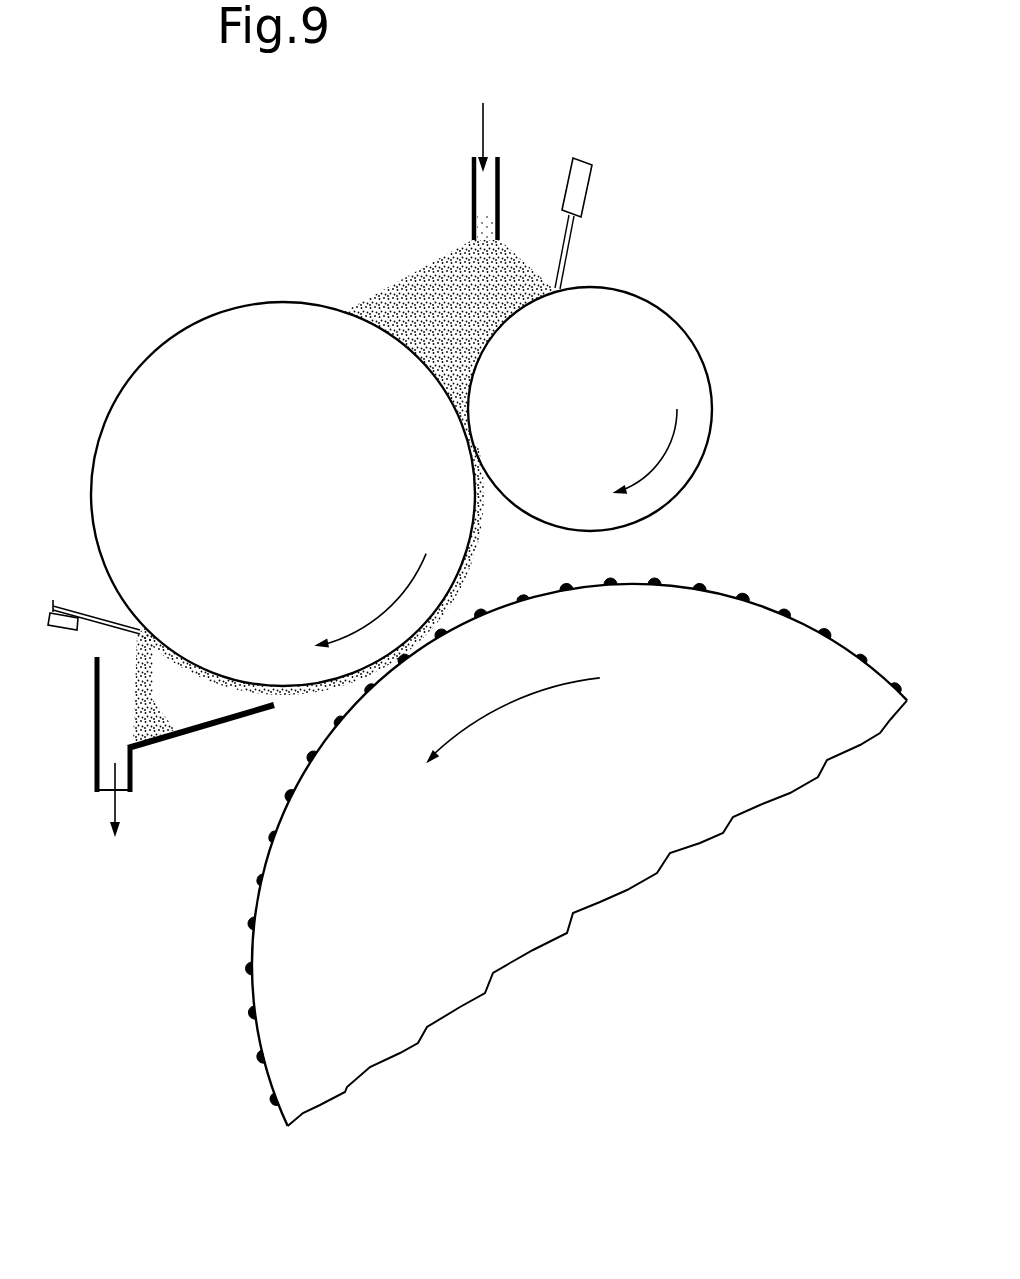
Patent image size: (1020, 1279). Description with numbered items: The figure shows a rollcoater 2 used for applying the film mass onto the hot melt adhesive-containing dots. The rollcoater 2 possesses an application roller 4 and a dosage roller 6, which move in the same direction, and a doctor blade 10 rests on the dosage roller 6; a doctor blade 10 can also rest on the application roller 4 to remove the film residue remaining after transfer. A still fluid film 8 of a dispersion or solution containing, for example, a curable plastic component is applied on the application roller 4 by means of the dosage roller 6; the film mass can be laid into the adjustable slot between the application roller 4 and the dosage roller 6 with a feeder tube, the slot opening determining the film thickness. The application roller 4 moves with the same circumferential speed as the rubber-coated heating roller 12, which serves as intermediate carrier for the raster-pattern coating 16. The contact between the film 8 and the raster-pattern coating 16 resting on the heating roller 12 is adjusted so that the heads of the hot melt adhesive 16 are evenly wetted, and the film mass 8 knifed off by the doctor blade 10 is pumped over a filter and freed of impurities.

The rollcoater 2 is at (404, 197).
The application roller 4 is at (285, 505).
The dosage roller 6 is at (677, 373).
The film 8 is at (470, 551).
The doctor blade 10 is at (587, 228).
The rubber-coated heating roller 12 is at (572, 848).
The raster-pattern coating 16 is at (612, 578).